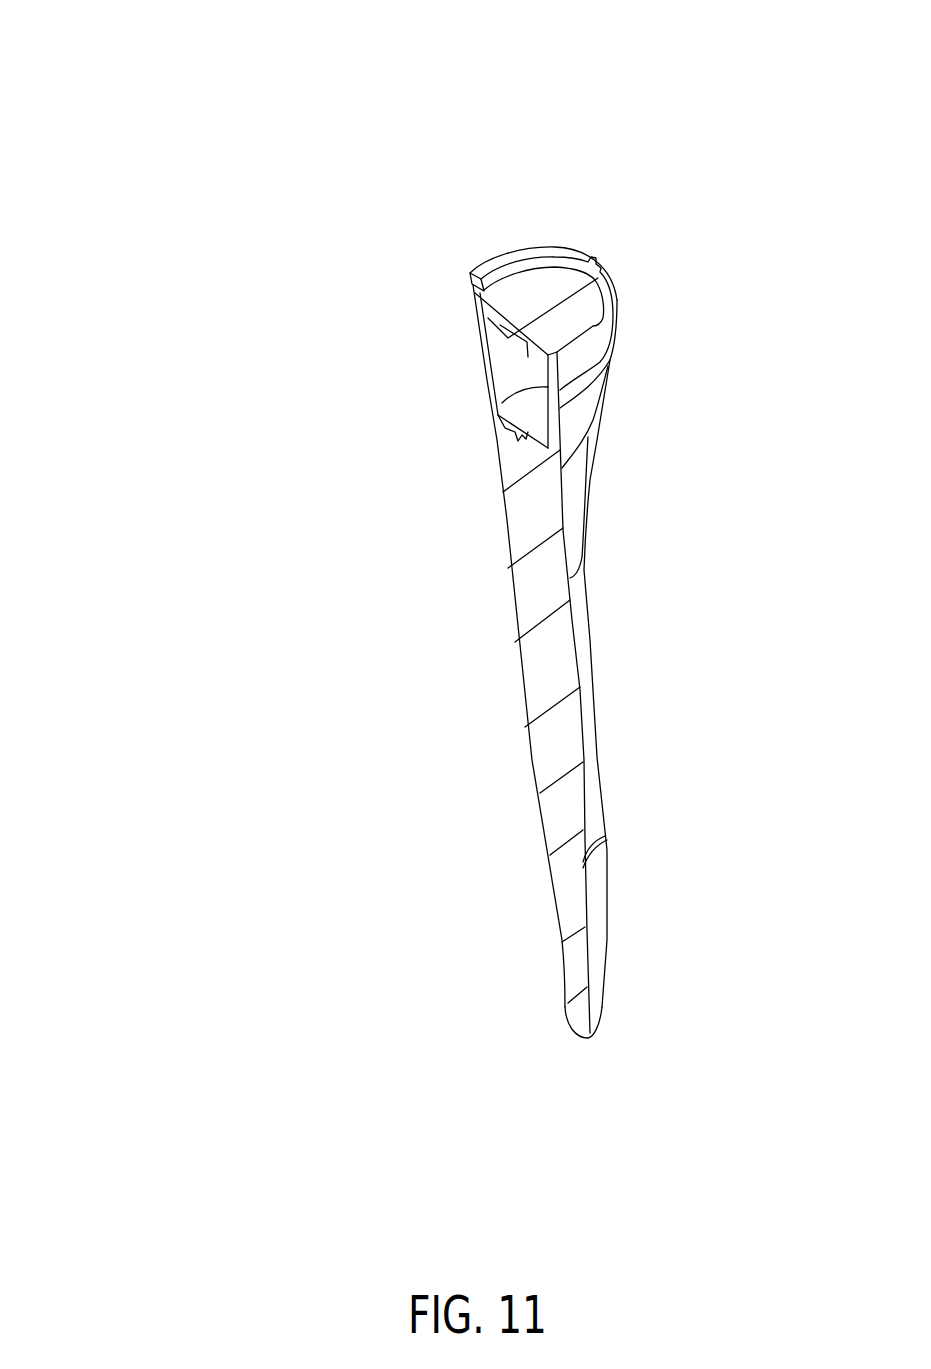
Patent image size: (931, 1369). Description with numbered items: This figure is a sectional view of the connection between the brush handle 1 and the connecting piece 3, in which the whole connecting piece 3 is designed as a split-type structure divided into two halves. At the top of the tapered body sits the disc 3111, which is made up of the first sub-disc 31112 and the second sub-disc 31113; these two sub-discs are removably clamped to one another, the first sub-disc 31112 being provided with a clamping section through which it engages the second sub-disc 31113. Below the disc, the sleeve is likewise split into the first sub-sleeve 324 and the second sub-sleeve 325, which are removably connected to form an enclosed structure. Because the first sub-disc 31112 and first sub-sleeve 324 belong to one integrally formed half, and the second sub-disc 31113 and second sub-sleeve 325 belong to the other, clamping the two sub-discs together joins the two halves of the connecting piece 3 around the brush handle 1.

The brush handle 1 is at (566, 810).
The connecting piece 3 is at (435, 289).
The disc 3111 is at (559, 224).
The first sub-disc 31112 is at (519, 289).
The second sub-disc 31113 is at (664, 216).
The first sub-sleeve 324 is at (490, 387).
The second sub-sleeve 325 is at (555, 418).